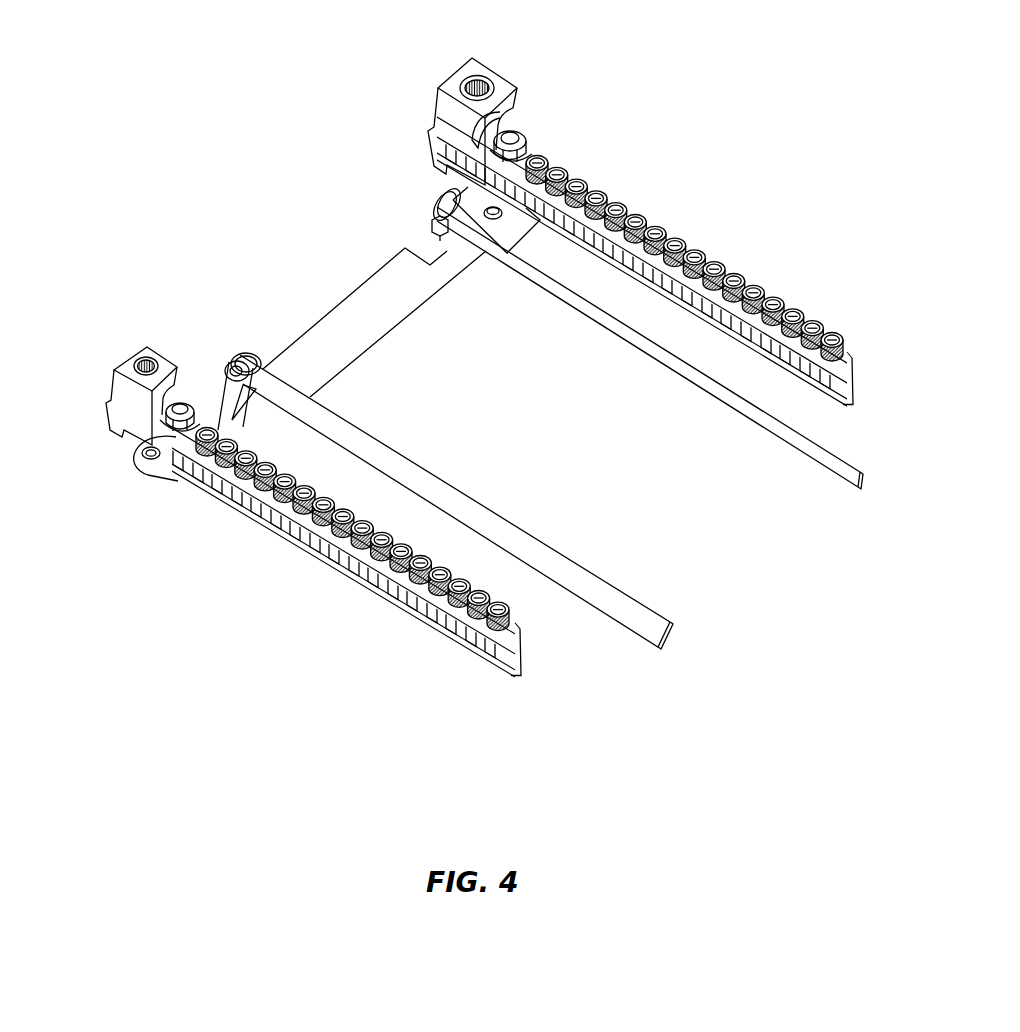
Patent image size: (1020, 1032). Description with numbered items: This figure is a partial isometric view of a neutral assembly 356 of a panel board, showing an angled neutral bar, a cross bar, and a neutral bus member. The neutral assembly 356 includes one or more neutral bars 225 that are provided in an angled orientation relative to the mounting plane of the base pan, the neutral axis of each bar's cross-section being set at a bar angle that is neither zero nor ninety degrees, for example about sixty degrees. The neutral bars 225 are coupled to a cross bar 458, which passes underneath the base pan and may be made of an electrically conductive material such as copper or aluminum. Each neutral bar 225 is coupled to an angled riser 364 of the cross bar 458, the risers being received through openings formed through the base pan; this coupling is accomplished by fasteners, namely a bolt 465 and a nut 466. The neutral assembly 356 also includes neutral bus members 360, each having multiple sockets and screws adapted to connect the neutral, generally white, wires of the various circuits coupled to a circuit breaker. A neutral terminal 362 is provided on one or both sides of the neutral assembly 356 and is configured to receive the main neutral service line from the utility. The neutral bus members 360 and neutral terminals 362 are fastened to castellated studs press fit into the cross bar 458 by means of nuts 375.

The neutral assembly 356 is at (290, 205).
The neutral bus member 360 is at (690, 236).
The neutral terminal 362 is at (456, 77).
The nut 375 is at (525, 143).
The angled riser 364 is at (428, 205).
The bolt 465 is at (440, 198).
The nut 466 is at (425, 226).
The cross bar 458 is at (340, 288).
The neutral bar 225 is at (735, 408).